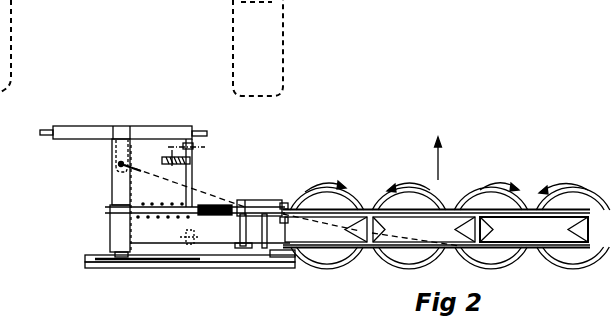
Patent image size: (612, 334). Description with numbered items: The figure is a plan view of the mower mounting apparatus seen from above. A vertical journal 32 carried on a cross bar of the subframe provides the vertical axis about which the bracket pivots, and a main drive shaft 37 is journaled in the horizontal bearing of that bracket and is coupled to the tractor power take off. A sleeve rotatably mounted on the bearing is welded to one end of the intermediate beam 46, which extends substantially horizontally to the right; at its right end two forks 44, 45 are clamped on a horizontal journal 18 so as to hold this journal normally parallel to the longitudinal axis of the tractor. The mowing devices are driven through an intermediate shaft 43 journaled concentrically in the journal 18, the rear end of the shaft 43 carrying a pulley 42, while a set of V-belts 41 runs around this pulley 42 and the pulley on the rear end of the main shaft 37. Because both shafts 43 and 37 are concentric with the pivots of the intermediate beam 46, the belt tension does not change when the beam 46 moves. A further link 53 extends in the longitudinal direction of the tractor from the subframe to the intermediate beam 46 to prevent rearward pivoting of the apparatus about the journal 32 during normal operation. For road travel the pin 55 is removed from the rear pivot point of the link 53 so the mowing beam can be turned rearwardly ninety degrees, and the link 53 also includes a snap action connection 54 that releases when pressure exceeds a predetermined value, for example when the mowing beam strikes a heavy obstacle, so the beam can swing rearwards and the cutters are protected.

The horizontal journal 18 is at (283, 200).
The vertical journal 32 is at (111, 158).
The main drive shaft 37 is at (118, 268).
The V-belts 41 is at (190, 264).
The pulley 42 is at (289, 258).
The intermediate shaft 43 is at (266, 256).
The fork 44 is at (248, 255).
The fork 45 is at (260, 200).
The intermediate beam 46 is at (112, 236).
The link 53 is at (192, 182).
The snap action connection 54 is at (172, 167).
The pin 55 is at (195, 243).